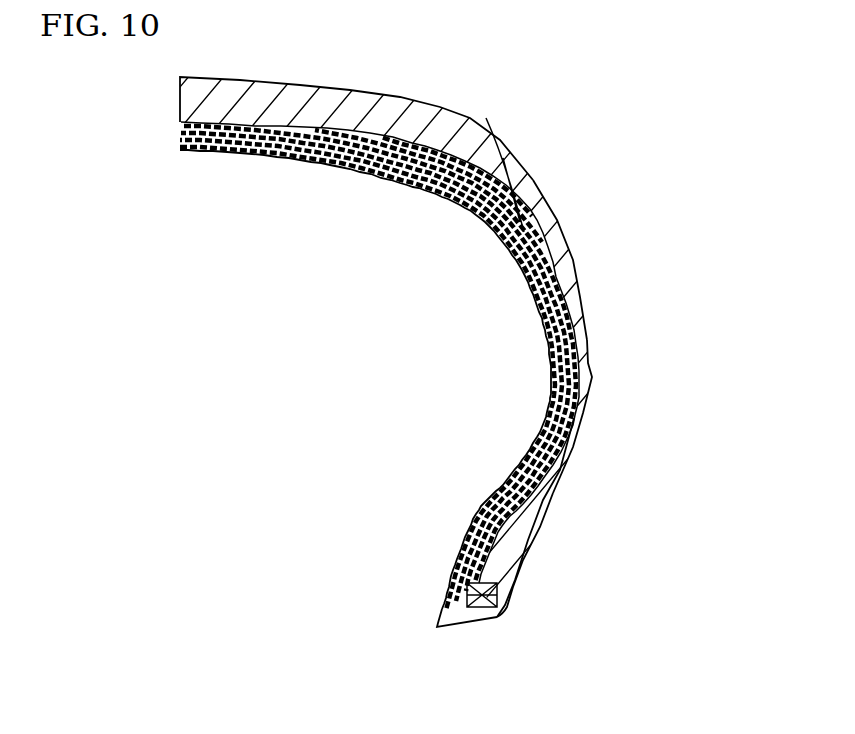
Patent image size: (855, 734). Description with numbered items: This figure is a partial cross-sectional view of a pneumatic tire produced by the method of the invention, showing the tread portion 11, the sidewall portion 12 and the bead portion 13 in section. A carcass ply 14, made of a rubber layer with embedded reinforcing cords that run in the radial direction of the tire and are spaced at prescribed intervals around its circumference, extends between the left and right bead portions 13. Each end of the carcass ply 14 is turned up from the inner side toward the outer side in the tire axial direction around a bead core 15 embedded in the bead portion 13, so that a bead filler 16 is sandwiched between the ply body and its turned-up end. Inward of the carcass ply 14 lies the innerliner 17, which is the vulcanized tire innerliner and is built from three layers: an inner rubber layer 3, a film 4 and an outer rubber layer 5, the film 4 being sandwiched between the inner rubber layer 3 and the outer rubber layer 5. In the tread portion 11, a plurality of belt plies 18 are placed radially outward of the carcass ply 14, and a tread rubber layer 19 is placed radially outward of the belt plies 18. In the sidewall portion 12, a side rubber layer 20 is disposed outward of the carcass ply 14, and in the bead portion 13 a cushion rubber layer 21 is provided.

The inner rubber layer 3 is at (237, 157).
The film 4 is at (290, 158).
The outer rubber layer 5 is at (328, 160).
The tread portion 11 is at (337, 90).
The sidewall portion 12 is at (589, 344).
The bead portion 13 is at (521, 582).
The carcass ply 14 is at (567, 258).
The bead core 15 is at (452, 586).
The bead filler 16 is at (473, 515).
The innerliner 17 is at (432, 197).
The belt plies 18 is at (257, 127).
The tread rubber layer 19 is at (450, 117).
The side rubber layer 20 is at (563, 453).
The cushion rubber layer 21 is at (485, 617).